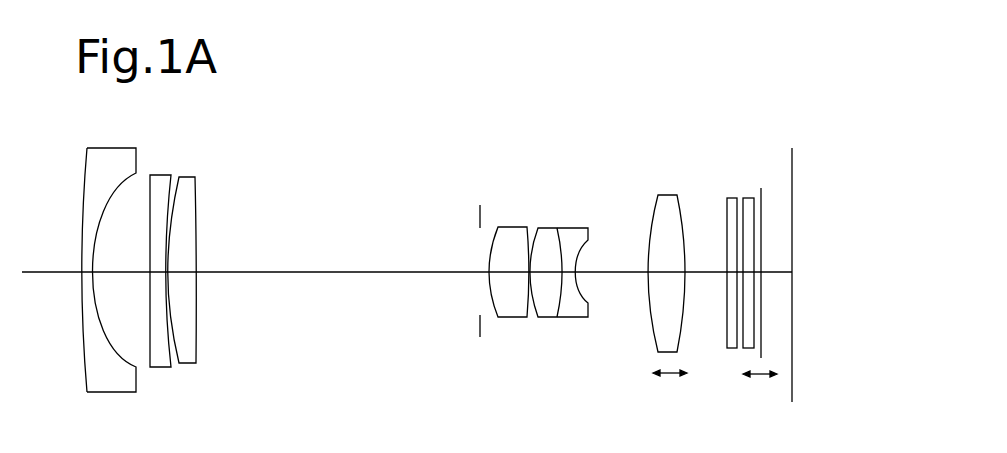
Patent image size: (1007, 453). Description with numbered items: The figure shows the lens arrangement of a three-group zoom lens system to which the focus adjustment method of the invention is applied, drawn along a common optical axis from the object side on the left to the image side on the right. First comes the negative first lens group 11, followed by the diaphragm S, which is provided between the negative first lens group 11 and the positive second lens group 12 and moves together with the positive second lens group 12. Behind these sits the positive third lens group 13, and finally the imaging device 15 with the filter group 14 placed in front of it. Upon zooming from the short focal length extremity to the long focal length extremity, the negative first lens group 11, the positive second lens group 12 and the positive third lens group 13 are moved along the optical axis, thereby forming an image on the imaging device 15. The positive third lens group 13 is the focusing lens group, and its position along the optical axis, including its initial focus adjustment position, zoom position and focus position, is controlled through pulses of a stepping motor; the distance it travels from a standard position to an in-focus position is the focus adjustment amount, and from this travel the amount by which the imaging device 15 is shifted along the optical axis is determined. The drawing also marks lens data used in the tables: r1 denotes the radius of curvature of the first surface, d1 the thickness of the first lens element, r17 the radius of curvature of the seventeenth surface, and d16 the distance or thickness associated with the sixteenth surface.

The negative first lens group 11 is at (137, 251).
The positive second lens group 12 is at (551, 220).
The positive third lens group 13 is at (664, 204).
The filter group 14 is at (797, 219).
The imaging device 15 is at (762, 180).
The diaphragm S is at (480, 198).
The radius of curvature r1 is at (82, 318).
The lens-element thickness d1 is at (88, 268).
The radius of curvature r17 is at (754, 245).
The distance between lens elements d16 is at (749, 272).